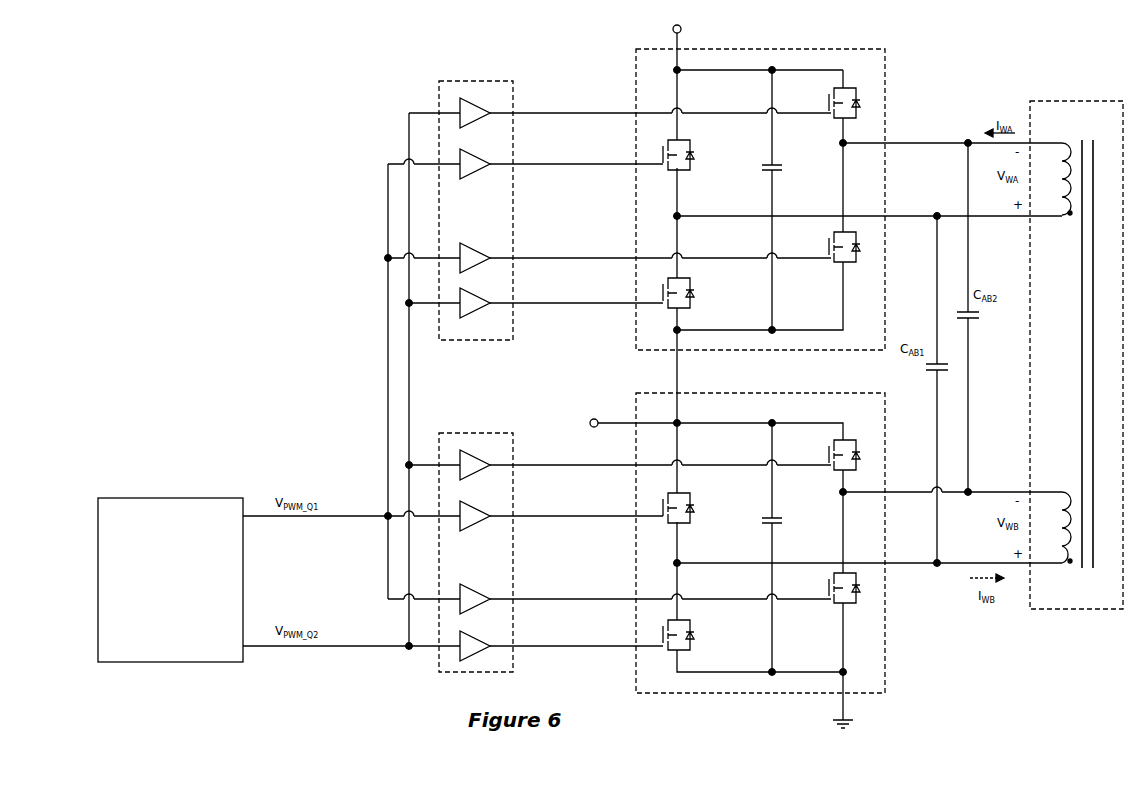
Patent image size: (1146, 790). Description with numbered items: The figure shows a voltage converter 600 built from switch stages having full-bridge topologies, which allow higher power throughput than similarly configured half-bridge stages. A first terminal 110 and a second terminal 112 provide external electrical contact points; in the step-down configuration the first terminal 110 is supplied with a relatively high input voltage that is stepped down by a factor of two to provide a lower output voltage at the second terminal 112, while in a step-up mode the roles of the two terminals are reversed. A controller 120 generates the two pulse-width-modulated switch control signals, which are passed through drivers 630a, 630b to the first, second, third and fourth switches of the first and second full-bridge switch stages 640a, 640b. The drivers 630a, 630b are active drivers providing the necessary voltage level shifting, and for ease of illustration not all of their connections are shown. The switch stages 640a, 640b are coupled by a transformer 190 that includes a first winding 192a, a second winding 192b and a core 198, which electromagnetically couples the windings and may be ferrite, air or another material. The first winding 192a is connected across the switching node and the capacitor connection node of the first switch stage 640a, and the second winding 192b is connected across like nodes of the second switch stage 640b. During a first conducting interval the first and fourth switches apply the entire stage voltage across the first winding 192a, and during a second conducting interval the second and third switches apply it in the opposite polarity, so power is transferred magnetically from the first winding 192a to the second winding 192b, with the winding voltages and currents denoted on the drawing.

The voltage converter 600 is at (149, 127).
The first terminal 110 is at (687, 40).
The second terminal 112 is at (619, 423).
The controller 120 is at (170, 570).
The driver 630a is at (476, 201).
The driver 630b is at (476, 543).
The first full-bridge switch stage 640a is at (760, 190).
The second full-bridge switch stage 640b is at (760, 539).
The transformer 190 is at (1076, 346).
The first winding 192a is at (1055, 194).
The second winding 192b is at (1055, 543).
The core 198 is at (1088, 344).